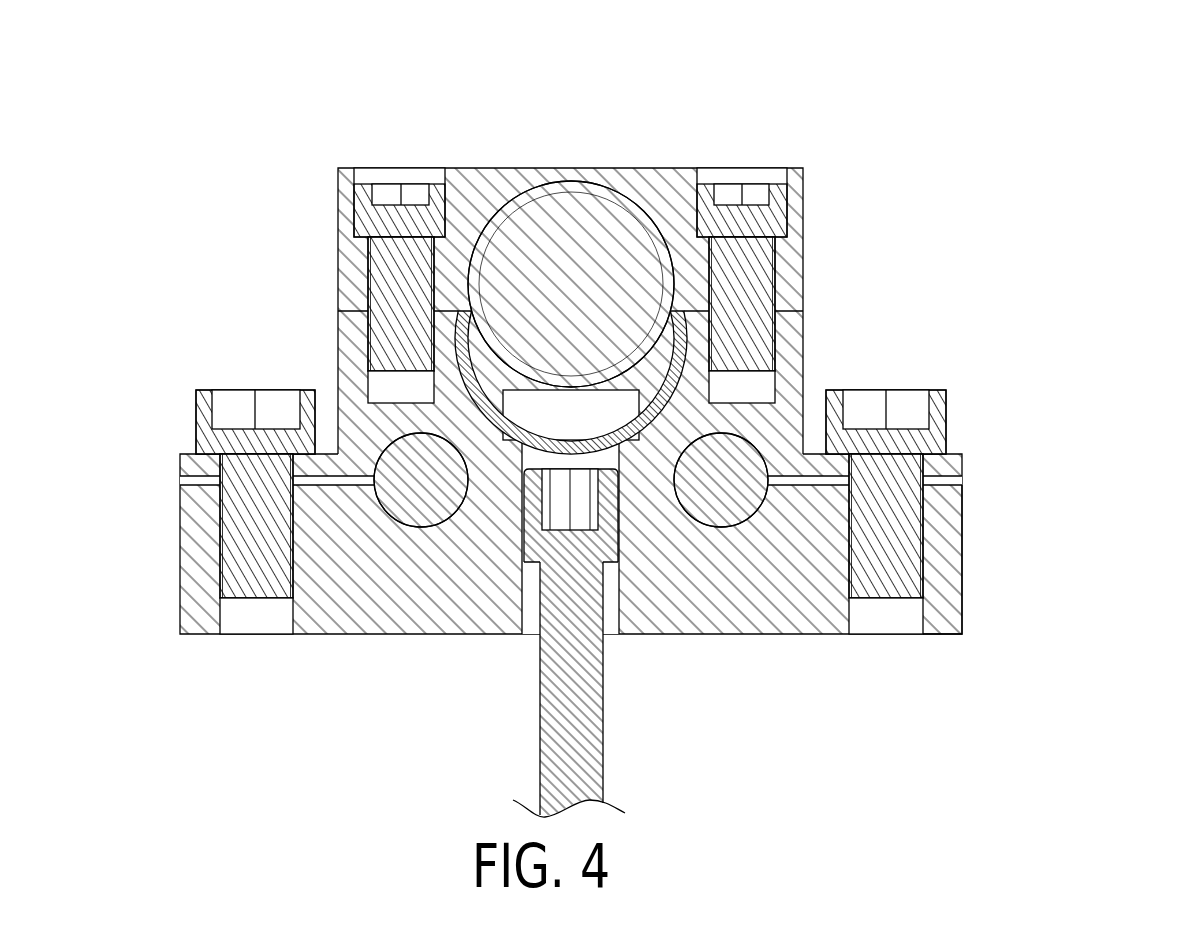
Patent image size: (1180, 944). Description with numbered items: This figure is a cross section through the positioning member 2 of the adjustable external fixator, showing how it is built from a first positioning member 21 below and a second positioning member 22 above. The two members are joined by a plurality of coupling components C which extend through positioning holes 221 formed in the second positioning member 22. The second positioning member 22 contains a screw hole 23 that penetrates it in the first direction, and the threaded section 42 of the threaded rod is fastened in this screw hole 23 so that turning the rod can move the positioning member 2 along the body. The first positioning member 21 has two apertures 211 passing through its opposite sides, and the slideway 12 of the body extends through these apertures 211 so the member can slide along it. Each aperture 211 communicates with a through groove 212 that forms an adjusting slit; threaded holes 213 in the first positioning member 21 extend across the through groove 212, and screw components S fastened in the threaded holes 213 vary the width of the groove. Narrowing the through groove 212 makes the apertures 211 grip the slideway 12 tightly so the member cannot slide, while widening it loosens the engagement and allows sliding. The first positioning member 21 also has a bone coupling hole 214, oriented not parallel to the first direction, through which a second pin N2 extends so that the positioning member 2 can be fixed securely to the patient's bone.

The positioning member 2 is at (661, 382).
The first positioning member 21 is at (488, 602).
The second positioning member 22 is at (498, 178).
The positioning holes 221 is at (758, 175).
The screw hole 23 is at (572, 244).
The threaded section 42 is at (588, 182).
The coupling components C is at (675, 227).
The screw components S is at (938, 392).
The through groove 212 is at (994, 493).
The threaded holes 213 is at (923, 517).
The bone coupling hole 214 is at (613, 593).
The slideway 12 is at (586, 572).
The apertures 211 is at (733, 527).
The second pin N2 is at (582, 738).